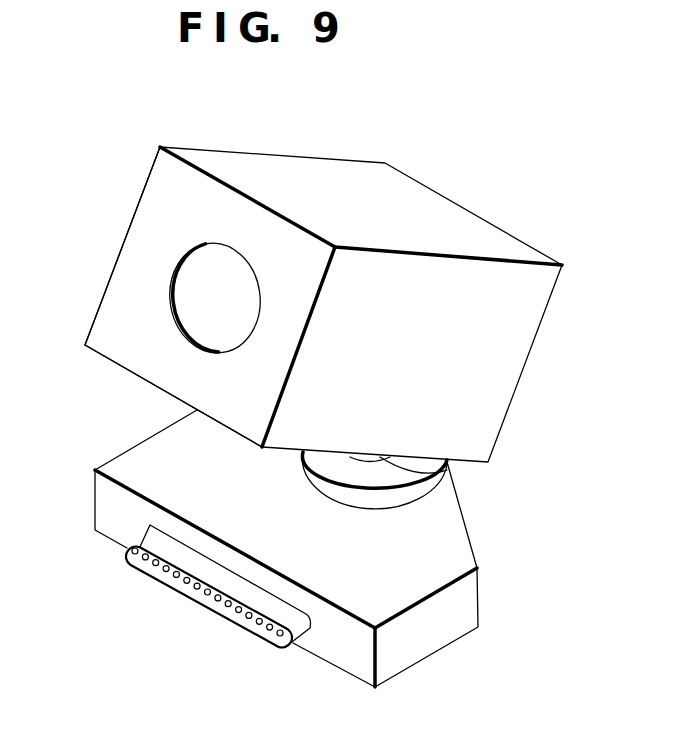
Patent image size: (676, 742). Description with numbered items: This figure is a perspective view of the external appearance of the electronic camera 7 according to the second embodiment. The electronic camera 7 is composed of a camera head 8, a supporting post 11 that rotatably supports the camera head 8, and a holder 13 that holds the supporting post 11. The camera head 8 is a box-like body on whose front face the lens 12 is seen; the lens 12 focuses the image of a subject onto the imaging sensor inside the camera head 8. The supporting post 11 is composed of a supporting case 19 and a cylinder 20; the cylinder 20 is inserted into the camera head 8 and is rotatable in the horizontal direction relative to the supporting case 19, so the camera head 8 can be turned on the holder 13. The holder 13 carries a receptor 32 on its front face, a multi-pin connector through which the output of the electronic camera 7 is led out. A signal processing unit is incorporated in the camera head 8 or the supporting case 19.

The electronic camera 7 is at (132, 205).
The camera head 8 is at (114, 349).
The lens 12 is at (187, 292).
The cylinder 20 is at (417, 480).
The supporting post 11 is at (393, 497).
The supporting case 19 is at (477, 558).
The holder 13 is at (393, 592).
The receptor 32 is at (163, 575).